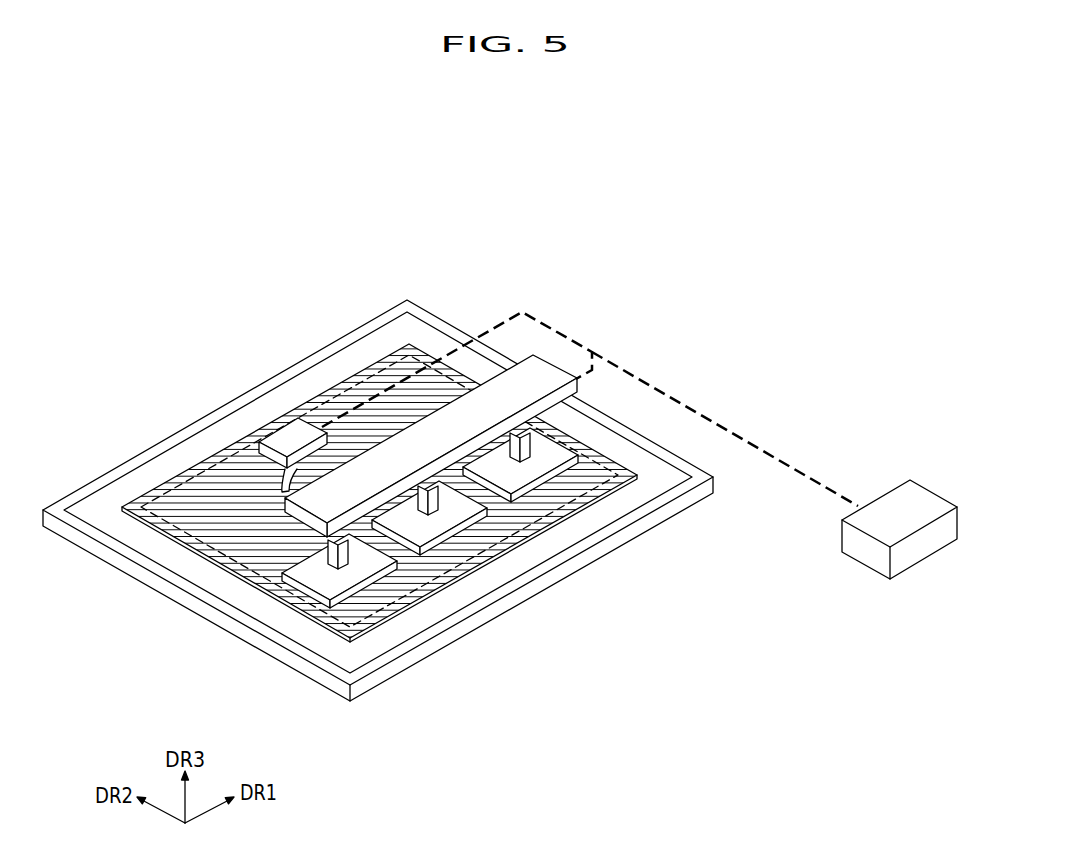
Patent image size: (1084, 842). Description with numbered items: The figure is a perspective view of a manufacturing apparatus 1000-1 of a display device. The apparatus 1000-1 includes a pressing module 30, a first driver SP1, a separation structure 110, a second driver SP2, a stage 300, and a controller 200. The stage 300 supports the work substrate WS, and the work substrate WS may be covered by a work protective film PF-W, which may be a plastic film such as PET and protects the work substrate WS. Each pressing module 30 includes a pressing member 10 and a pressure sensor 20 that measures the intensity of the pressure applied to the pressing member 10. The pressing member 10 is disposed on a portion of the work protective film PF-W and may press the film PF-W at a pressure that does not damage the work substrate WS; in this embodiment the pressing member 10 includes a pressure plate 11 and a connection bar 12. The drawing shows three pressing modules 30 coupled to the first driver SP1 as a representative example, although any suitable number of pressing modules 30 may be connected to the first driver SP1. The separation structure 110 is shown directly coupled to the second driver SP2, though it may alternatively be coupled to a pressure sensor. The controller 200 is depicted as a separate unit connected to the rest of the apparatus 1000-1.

The manufacturing apparatus 1000-1 is at (501, 477).
The stage 300 is at (703, 487).
The separation structure 110 is at (284, 495).
The work protective film PF-W is at (318, 385).
The work substrate WS is at (377, 372).
The pressing module 30 is at (387, 542).
The pressing member 10 is at (430, 576).
The pressure plate 11 is at (343, 593).
The connection bar 12 is at (347, 548).
The pressure sensor 20 is at (381, 514).
The first driver SP1 is at (310, 520).
The second driver SP2 is at (280, 437).
The controller 200 is at (920, 503).